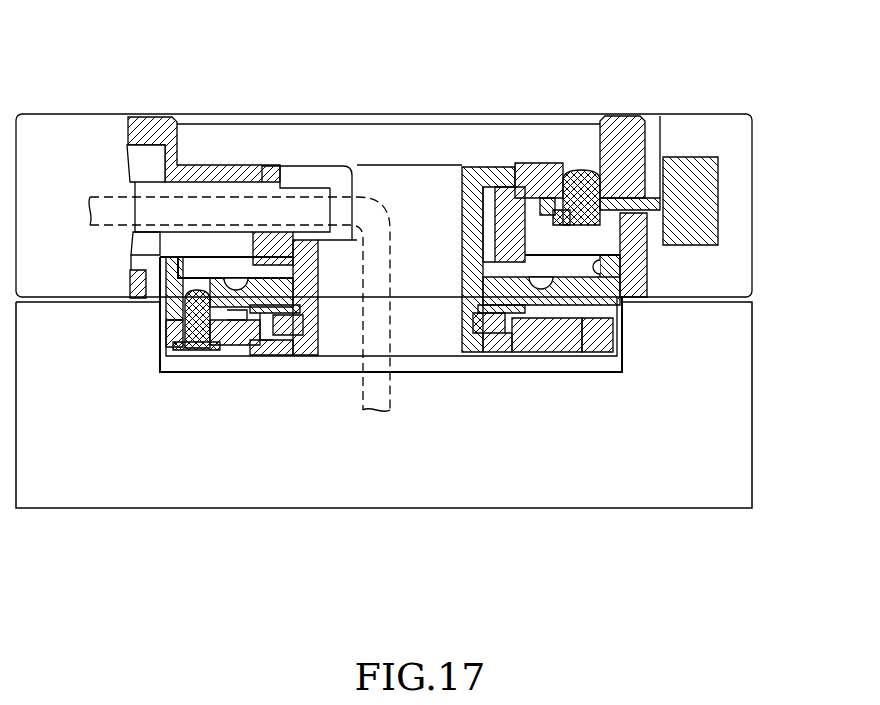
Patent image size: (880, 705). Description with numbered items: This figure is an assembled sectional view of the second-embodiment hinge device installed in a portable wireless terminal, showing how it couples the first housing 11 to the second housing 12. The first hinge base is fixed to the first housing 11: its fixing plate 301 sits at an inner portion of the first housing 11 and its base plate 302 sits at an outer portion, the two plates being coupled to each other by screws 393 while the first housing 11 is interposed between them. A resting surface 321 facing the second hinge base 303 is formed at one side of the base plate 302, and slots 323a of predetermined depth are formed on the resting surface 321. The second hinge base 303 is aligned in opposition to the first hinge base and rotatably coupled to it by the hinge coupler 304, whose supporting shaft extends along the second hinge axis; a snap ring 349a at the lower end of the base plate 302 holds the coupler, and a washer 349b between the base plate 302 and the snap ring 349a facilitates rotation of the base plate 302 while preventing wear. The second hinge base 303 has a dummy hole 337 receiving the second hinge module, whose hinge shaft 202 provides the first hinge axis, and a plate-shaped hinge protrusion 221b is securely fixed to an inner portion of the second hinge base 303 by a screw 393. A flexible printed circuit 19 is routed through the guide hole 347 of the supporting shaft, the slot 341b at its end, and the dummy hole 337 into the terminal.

The first housing 11 is at (58, 492).
The second housing 12 is at (42, 127).
The flexible printed circuit 19 is at (202, 207).
The hinge shaft 202 is at (704, 146).
The hinge protrusion 221b is at (656, 197).
The fixing plate 301 is at (530, 352).
The base plate 302 is at (585, 308).
The second hinge base 303 is at (621, 122).
The hinge coupler 304 is at (481, 173).
The resting surface 321 is at (647, 267).
The slots 323a is at (237, 285).
The dummy hole 337 is at (135, 160).
The slot 341b is at (316, 177).
The guide hole 347 is at (403, 185).
The snap ring 349a is at (283, 345).
The washer 349b is at (258, 345).
The screws 393 is at (577, 168).